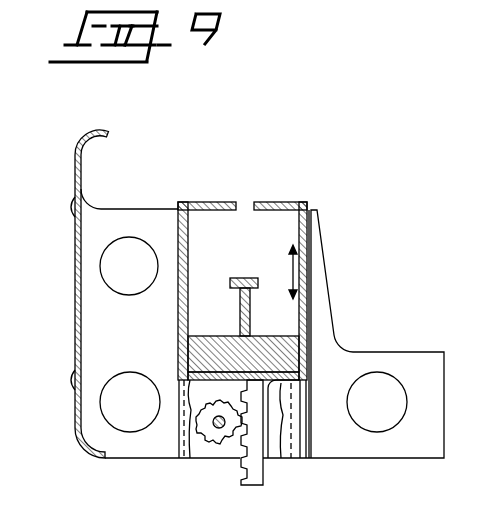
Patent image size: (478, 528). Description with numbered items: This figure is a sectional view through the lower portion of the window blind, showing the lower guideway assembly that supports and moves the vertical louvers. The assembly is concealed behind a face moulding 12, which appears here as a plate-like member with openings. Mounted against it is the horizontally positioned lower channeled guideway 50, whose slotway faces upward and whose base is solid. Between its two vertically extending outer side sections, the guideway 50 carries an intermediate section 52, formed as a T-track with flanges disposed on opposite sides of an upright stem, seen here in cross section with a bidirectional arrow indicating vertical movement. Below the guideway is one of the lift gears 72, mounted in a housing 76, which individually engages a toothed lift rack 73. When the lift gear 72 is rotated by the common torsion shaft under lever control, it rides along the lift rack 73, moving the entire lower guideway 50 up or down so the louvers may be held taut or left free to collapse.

The face moulding 12 is at (75, 303).
The lower channeled guideway 50 is at (287, 202).
The intermediate section 52 is at (240, 304).
The lift gear 72 is at (219, 442).
The lift rack 73 is at (260, 484).
The housing 76 is at (305, 456).